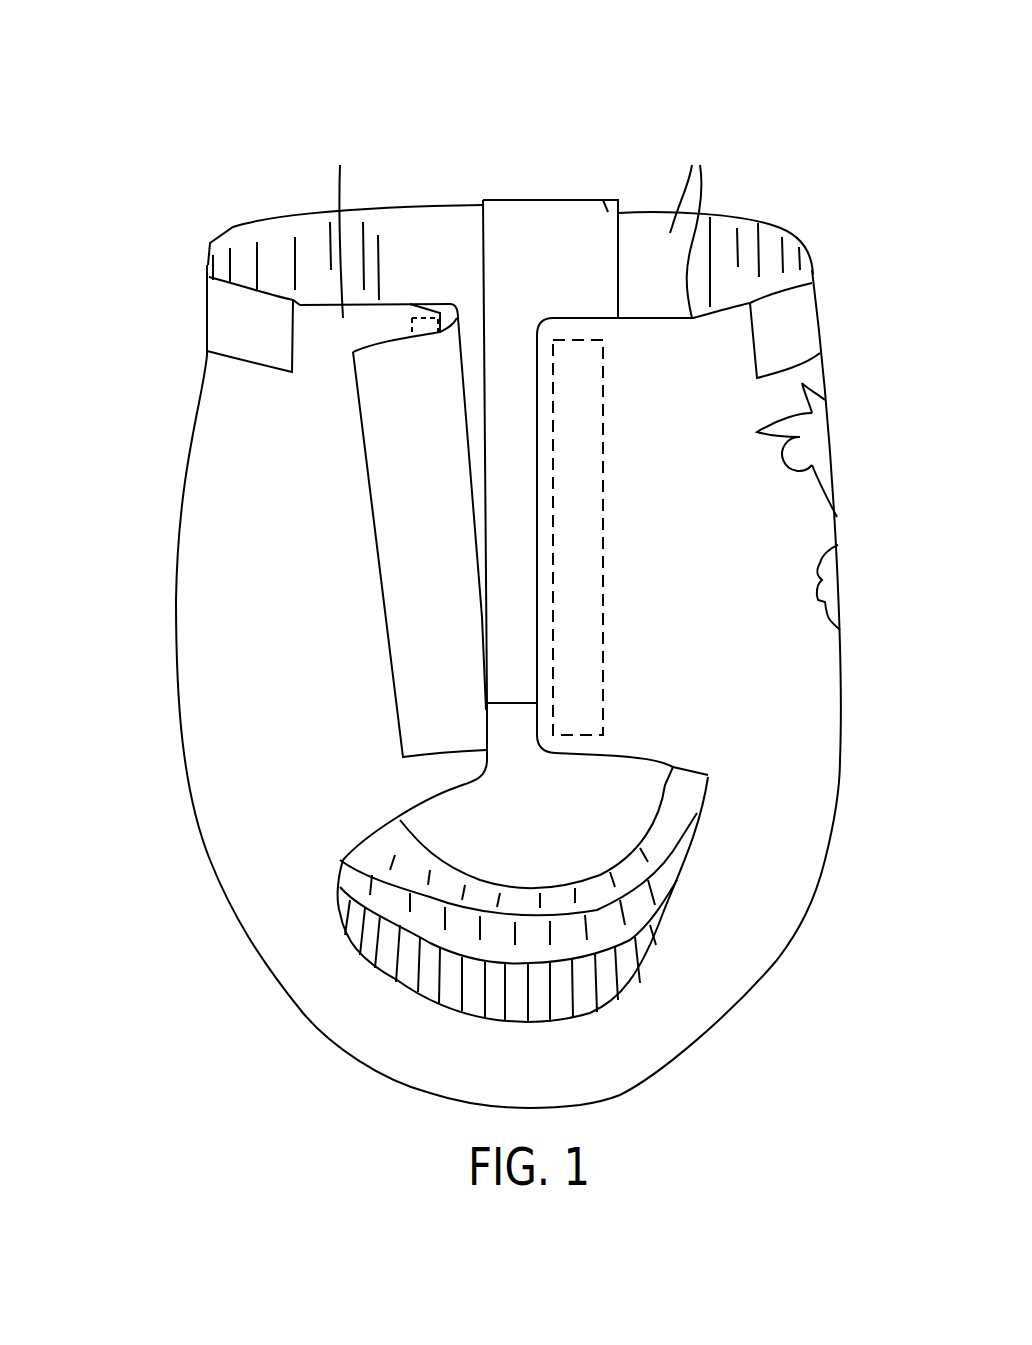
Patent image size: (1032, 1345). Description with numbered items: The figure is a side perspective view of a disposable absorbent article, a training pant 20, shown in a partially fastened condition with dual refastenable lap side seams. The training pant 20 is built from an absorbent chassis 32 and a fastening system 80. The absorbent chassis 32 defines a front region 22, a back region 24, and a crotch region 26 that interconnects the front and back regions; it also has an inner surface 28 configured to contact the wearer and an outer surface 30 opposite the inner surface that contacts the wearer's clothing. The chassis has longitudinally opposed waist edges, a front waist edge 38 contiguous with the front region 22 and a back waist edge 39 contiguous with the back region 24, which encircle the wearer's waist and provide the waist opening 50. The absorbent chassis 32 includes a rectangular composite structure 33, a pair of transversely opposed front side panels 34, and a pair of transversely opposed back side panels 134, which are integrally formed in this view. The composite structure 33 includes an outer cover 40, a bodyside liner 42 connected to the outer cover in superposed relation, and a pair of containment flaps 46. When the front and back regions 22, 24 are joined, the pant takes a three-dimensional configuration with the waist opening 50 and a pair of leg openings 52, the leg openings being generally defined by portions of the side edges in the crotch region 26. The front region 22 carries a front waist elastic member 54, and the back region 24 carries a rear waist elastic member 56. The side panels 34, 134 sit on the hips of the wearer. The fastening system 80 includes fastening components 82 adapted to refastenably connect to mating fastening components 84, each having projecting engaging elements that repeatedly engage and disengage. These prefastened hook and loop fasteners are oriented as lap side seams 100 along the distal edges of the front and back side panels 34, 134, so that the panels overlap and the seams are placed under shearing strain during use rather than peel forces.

The training pant 20 is at (224, 222).
The front region 22 is at (830, 668).
The back region 24 is at (198, 698).
The crotch region 26 is at (440, 1072).
The inner surface 28 is at (498, 294).
The outer surface 30 is at (755, 927).
The absorbent chassis 32 is at (284, 976).
The rectangular composite structure 33 is at (288, 980).
The front side panels 34 is at (690, 225).
The front waist edge 38 is at (755, 233).
The back waist edge 39 is at (292, 208).
The outer cover 40 is at (767, 963).
The bodyside liner 42 is at (767, 237).
The containment flaps 46 is at (443, 1005).
The waist opening 50 is at (473, 200).
The leg openings 52 is at (440, 820).
The front waist elastic member 54 is at (815, 322).
The rear waist elastic member 56 is at (207, 318).
The fastening system 80 is at (477, 406).
The fastening components 82 is at (578, 548).
The mating fastening components 84 is at (608, 212).
The lap side seams 100 is at (494, 185).
The back side panels 134 is at (386, 212).